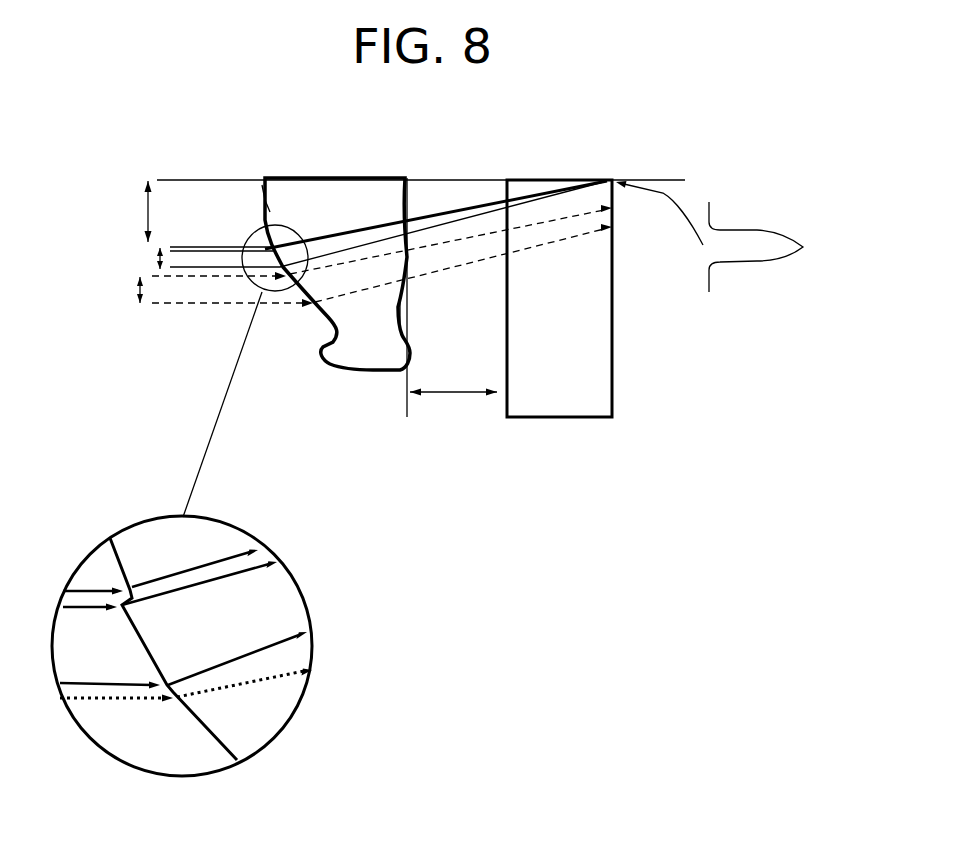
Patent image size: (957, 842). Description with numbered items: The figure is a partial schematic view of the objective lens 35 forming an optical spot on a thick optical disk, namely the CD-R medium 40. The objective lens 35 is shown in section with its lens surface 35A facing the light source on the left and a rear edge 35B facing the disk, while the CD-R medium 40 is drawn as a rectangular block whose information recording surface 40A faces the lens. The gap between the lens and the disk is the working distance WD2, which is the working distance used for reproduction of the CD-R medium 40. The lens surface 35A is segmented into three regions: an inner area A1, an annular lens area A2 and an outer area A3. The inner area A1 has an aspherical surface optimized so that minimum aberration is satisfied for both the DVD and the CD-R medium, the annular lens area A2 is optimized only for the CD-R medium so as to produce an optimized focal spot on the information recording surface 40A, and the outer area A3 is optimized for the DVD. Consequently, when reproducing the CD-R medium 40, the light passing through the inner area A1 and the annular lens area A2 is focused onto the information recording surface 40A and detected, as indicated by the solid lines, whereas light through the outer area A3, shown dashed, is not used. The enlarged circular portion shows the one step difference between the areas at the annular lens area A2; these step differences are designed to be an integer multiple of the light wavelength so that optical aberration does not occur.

The objective lens 35 is at (360, 378).
The lens surface 35A is at (263, 197).
The blade rear edge 35B is at (405, 320).
The CD-R medium 40 is at (560, 430).
The information recording surface 40A is at (614, 364).
The inner area A1 is at (193, 530).
The annular lens area A2 is at (293, 595).
The outer area A3 is at (313, 748).
The working distance WD2 is at (453, 417).